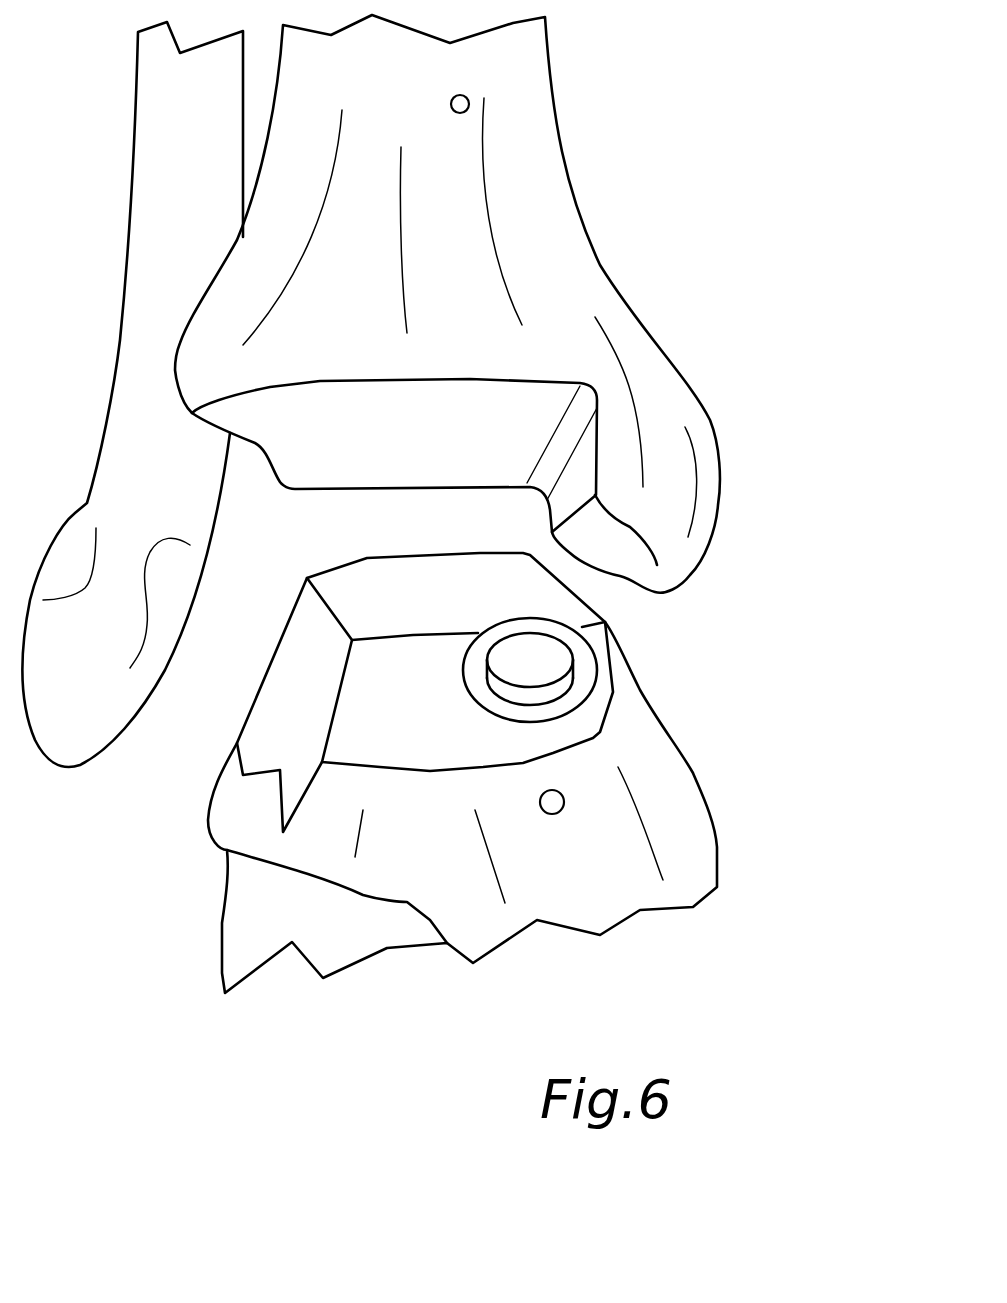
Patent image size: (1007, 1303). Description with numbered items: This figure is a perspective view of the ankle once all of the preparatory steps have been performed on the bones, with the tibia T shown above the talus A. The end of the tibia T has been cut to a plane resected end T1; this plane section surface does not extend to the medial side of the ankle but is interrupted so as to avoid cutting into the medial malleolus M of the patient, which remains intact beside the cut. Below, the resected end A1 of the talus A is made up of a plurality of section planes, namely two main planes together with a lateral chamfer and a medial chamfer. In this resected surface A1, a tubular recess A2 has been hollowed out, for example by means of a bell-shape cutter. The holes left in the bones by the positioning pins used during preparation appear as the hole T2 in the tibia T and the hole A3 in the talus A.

The tibia T is at (587, 225).
The plane resected end of the tibia T1 is at (383, 432).
The pin hole in the tibia T2 is at (466, 97).
The medial malleolus M is at (687, 490).
The talus A is at (205, 830).
The resected end of the talus A1 is at (406, 600).
The tubular recess A2 is at (578, 672).
The pin hole in the talus A3 is at (560, 797).